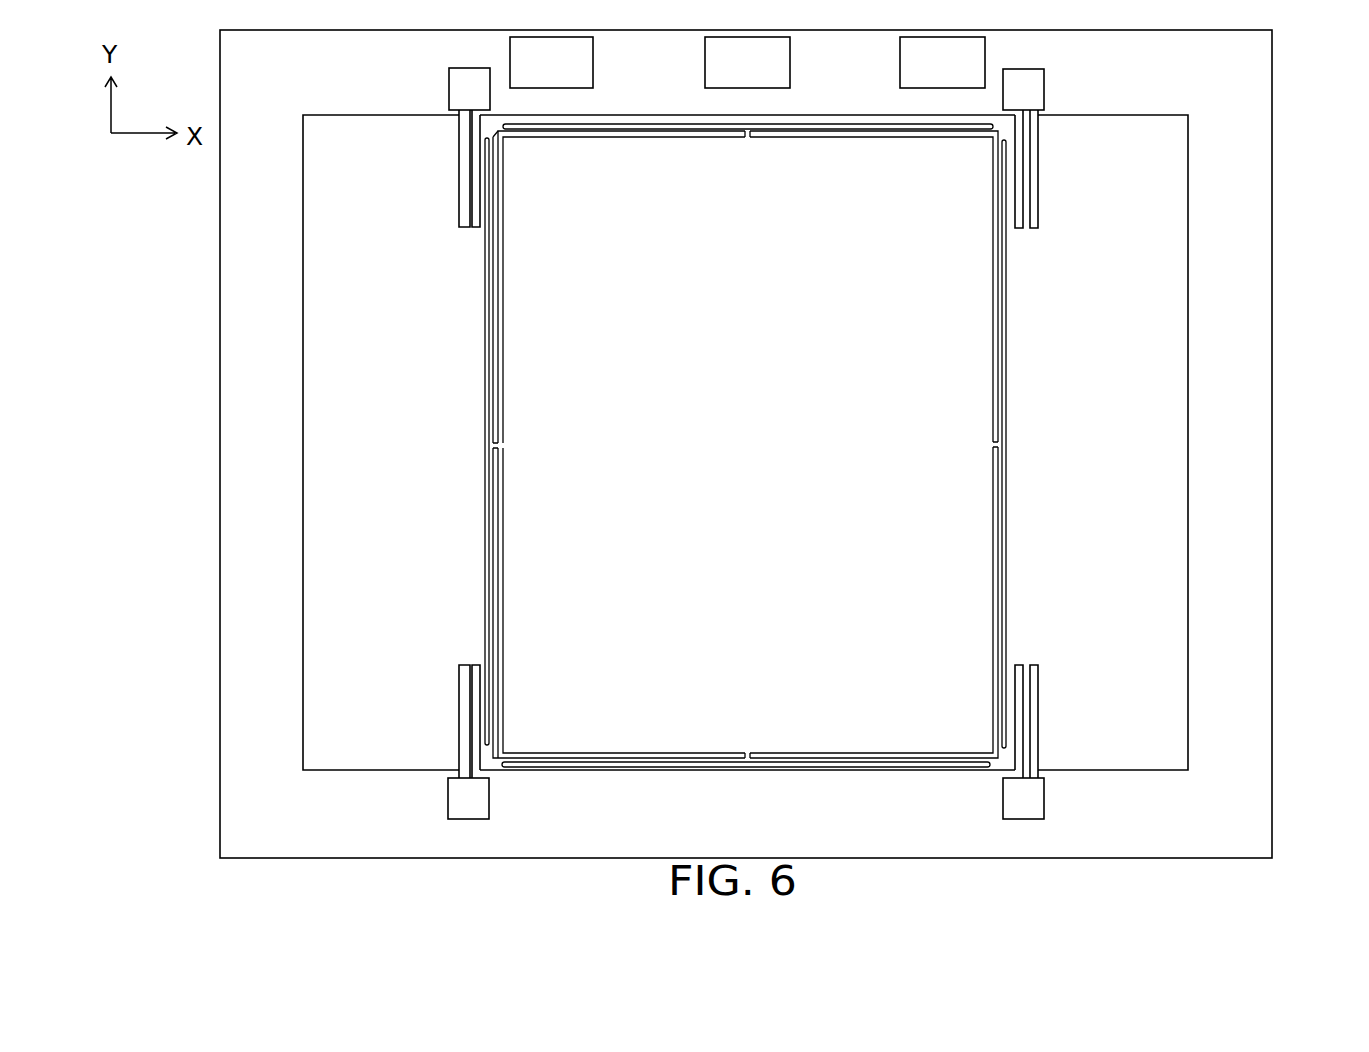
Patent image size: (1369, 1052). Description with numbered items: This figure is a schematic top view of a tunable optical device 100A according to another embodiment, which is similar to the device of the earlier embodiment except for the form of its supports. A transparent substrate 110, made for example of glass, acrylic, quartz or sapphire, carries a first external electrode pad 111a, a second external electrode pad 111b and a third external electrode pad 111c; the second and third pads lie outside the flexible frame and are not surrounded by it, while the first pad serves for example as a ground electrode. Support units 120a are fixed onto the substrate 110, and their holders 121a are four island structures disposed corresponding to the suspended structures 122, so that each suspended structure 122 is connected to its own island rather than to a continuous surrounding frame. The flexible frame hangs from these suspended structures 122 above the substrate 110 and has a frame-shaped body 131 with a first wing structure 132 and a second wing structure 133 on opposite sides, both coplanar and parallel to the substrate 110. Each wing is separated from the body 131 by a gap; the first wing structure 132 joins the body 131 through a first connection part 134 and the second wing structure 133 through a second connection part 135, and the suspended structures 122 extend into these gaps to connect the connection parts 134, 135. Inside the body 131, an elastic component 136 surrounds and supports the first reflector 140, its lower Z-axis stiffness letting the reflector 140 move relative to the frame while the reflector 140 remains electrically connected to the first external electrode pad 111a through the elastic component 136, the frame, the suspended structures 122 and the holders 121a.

The tunable optical device 100A is at (1366, 875).
The substrate 110 is at (248, 672).
The first external electrode pad 111a is at (578, 78).
The second external electrode pad 111b is at (773, 78).
The third external electrode pad 111c is at (968, 78).
The support unit 120a is at (636, 448).
The holder 121a is at (457, 95).
The suspended structure 122 is at (460, 198).
The body 131 is at (886, 121).
The first wing structure 132 is at (322, 367).
The second wing structure 133 is at (1165, 370).
The first connection part 134 is at (465, 610).
The second connection part 135 is at (1025, 610).
The elastic component 136 is at (965, 135).
The first reflector 140 is at (774, 464).